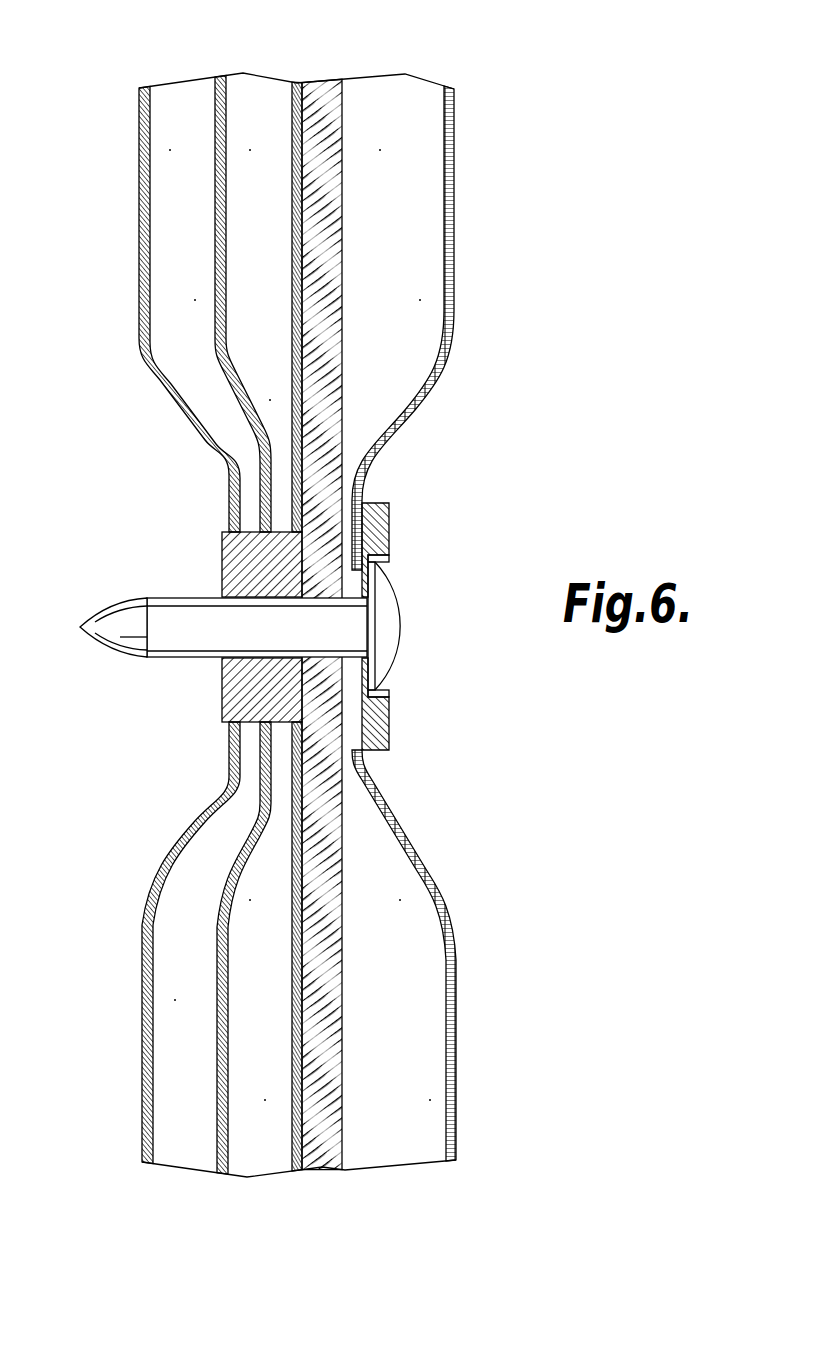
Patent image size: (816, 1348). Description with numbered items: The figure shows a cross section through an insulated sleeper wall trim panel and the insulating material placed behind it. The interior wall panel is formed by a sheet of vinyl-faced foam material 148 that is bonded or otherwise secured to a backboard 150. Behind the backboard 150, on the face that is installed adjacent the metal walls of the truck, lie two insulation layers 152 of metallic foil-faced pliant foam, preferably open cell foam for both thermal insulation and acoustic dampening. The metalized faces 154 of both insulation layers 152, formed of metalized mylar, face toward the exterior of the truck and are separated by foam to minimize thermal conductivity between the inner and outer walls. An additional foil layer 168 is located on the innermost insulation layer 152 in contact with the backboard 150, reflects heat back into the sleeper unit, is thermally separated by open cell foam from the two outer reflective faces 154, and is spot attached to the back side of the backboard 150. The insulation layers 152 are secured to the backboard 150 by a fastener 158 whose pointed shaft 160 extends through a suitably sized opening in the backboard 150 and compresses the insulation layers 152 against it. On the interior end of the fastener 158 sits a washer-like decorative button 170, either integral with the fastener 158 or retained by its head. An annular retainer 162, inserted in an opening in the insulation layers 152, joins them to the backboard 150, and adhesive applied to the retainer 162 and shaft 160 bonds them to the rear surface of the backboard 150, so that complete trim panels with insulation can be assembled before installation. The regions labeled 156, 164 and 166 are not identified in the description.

The vinyl-faced foam material 148 is at (409, 83).
The backboard 150 is at (331, 83).
The metallic foil-faced pliant foam insulation layers 152 is at (173, 1173).
The metalized faces 154 is at (218, 80).
The filler layer 156 is at (187, 90).
The fastener 158 is at (400, 640).
The pointed shaft 160 is at (188, 596).
The annular retainer 162 is at (274, 687).
The upper block 164 is at (248, 557).
The lower block 166 is at (220, 688).
The foil layer 168 is at (297, 85).
The washer-like decorative button 170 is at (377, 540).